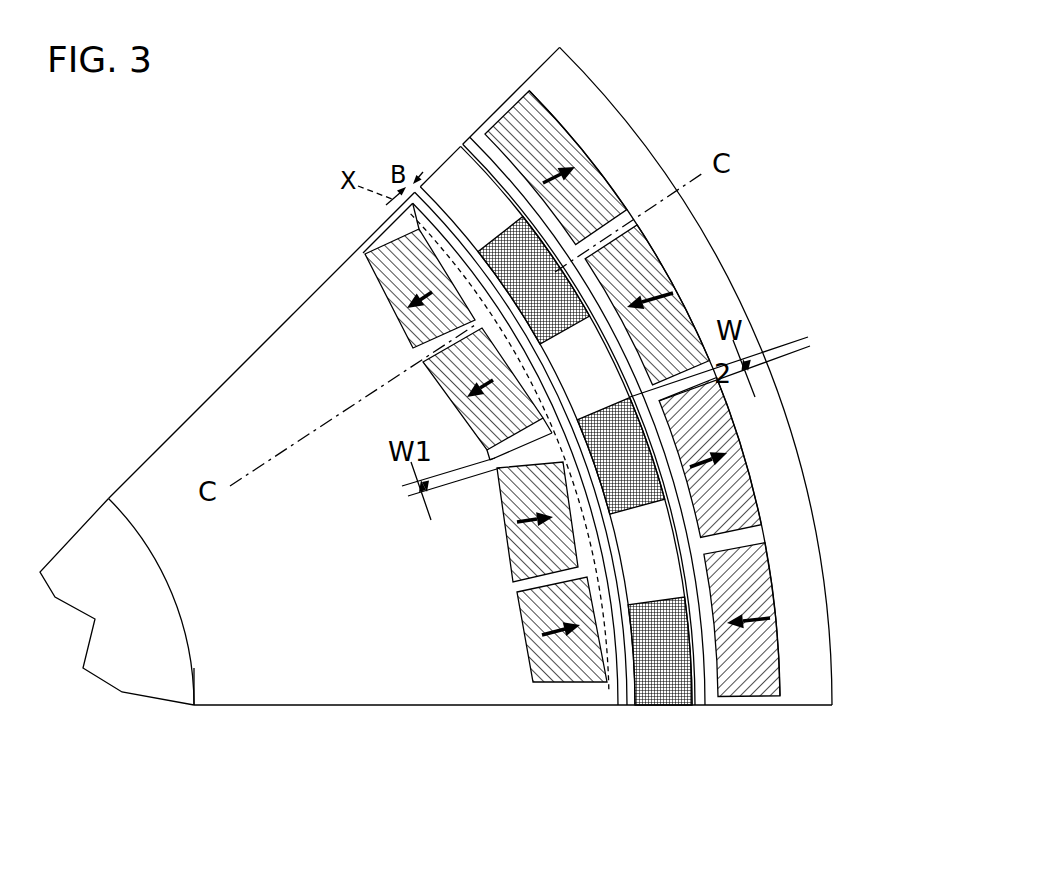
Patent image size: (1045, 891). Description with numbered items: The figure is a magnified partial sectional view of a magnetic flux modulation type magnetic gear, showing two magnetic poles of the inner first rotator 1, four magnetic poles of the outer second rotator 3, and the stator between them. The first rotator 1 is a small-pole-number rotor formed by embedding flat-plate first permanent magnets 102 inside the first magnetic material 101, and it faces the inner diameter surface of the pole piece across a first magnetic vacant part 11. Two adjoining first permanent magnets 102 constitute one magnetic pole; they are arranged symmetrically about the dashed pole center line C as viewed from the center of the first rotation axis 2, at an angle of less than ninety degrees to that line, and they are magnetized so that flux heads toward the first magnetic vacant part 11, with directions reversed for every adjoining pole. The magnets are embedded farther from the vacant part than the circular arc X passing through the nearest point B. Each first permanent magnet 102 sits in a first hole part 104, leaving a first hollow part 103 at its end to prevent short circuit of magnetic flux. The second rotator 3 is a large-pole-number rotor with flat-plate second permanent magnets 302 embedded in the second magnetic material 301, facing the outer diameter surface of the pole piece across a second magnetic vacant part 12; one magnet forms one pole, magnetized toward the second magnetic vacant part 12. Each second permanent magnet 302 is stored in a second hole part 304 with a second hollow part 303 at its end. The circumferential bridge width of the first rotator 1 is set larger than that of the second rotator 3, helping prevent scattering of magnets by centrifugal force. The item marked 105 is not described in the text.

The first rotator 1 is at (241, 362).
The first rotation axis 2 is at (98, 507).
The second rotator 3 is at (545, 72).
The first magnetic vacant part 11 is at (625, 705).
The second magnetic vacant part 12 is at (700, 705).
The first magnetic material 101 is at (322, 319).
The first permanent magnet 102 is at (370, 282).
The first hollow part 103 is at (370, 252).
The first hole part 104 is at (387, 217).
The rotor sleeve 105 is at (421, 199).
The second magnetic material 301 is at (563, 90).
The second permanent magnet 302 is at (580, 147).
The second hollow part 303 is at (523, 97).
The second hole part 304 is at (483, 121).